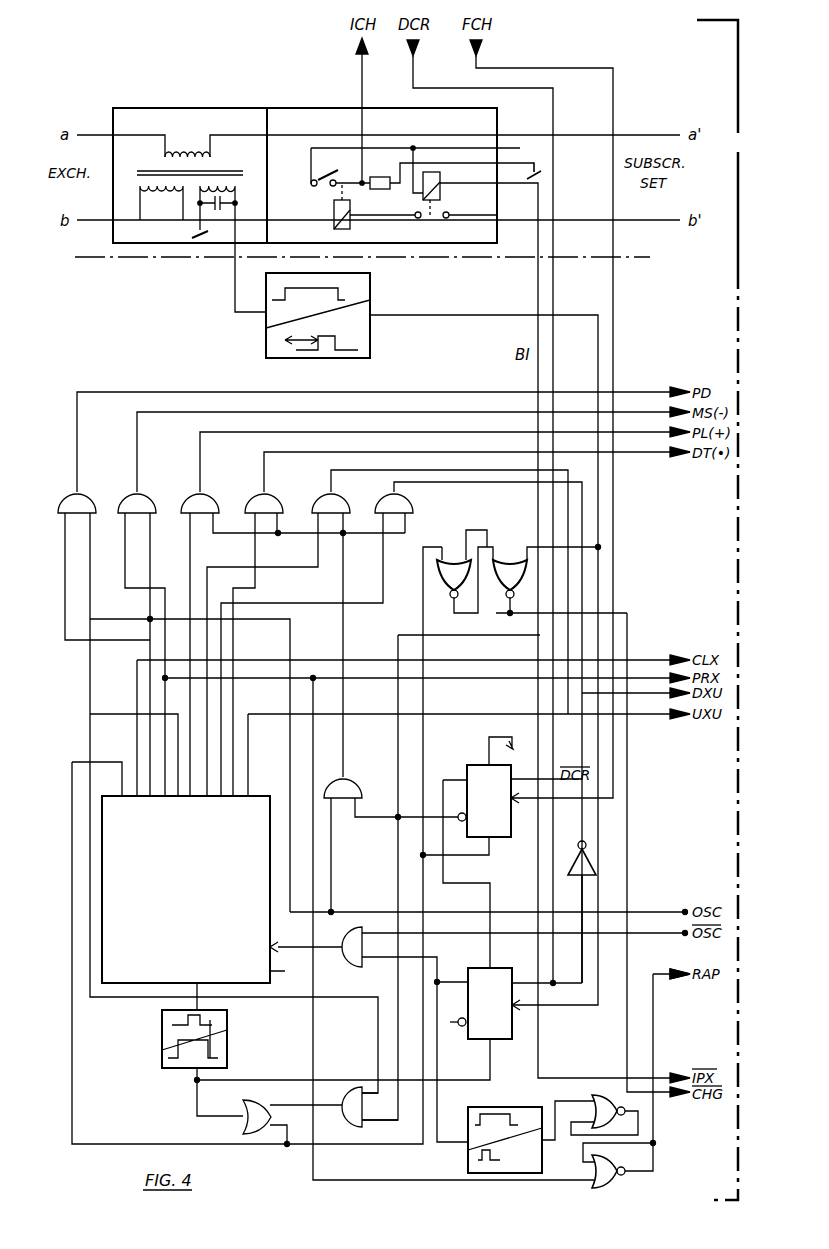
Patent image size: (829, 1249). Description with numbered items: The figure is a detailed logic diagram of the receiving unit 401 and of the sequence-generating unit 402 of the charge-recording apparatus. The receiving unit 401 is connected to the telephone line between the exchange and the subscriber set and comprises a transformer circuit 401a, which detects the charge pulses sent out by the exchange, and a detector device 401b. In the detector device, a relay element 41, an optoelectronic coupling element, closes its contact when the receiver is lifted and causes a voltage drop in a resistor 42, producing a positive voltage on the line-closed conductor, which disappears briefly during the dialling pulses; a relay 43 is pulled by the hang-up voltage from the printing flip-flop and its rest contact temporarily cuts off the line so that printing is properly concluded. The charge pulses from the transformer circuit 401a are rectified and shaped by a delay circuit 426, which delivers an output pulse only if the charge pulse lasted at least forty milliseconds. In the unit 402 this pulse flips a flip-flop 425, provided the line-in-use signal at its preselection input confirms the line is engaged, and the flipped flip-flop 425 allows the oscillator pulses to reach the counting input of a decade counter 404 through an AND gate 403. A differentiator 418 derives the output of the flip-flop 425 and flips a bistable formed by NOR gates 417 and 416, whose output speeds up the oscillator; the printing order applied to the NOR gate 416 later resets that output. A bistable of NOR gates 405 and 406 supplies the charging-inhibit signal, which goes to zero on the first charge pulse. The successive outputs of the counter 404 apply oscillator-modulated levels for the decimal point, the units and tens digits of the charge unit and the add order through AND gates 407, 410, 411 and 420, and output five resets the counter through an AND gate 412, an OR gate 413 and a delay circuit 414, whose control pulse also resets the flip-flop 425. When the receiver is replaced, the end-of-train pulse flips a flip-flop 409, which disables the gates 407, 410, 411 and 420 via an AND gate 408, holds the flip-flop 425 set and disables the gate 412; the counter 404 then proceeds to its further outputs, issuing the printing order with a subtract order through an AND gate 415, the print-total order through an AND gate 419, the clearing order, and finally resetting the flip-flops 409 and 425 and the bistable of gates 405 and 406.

The receiving unit 401 is at (758, 256).
The transformer circuit 401a is at (150, 238).
The detector device 401b is at (458, 236).
The relay element 41 is at (350, 224).
The resistor 42 is at (380, 177).
The relay 43 is at (440, 190).
The delay circuit 426 is at (370, 334).
The sequence generating unit 402 is at (758, 741).
The AND gate 419 is at (82, 505).
The AND gate 415 is at (142, 505).
The AND gate 411 is at (205, 505).
The AND gate 407 is at (268, 505).
The AND gate 420 is at (345, 490).
The AND gate 410 is at (408, 490).
The NOR gate 405 is at (454, 570).
The NOR gate 406 is at (510, 570).
The decade counter 404 is at (258, 808).
The AND gate 408 is at (350, 790).
The flip-flop 409 is at (485, 778).
The AND gate 403 is at (348, 955).
The flip-flop 425 is at (500, 1030).
The delay circuit 414 is at (222, 1040).
The OR gate 413 is at (246, 1094).
The AND gate 412 is at (348, 1115).
The differentiator 418 is at (468, 1155).
The NOR gate 417 is at (605, 1118).
The NOR gate 416 is at (605, 1178).